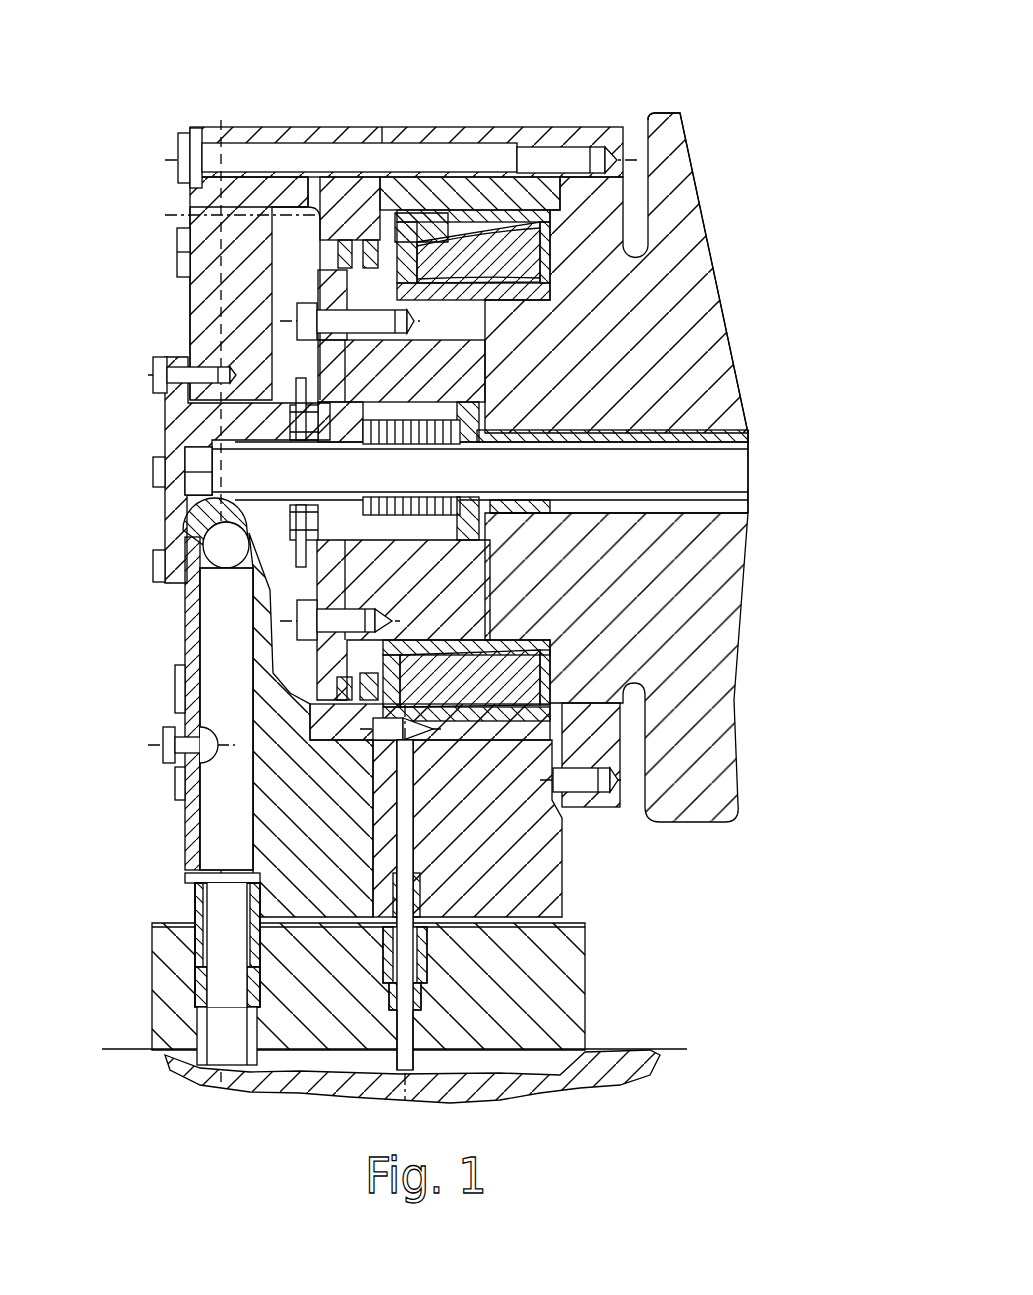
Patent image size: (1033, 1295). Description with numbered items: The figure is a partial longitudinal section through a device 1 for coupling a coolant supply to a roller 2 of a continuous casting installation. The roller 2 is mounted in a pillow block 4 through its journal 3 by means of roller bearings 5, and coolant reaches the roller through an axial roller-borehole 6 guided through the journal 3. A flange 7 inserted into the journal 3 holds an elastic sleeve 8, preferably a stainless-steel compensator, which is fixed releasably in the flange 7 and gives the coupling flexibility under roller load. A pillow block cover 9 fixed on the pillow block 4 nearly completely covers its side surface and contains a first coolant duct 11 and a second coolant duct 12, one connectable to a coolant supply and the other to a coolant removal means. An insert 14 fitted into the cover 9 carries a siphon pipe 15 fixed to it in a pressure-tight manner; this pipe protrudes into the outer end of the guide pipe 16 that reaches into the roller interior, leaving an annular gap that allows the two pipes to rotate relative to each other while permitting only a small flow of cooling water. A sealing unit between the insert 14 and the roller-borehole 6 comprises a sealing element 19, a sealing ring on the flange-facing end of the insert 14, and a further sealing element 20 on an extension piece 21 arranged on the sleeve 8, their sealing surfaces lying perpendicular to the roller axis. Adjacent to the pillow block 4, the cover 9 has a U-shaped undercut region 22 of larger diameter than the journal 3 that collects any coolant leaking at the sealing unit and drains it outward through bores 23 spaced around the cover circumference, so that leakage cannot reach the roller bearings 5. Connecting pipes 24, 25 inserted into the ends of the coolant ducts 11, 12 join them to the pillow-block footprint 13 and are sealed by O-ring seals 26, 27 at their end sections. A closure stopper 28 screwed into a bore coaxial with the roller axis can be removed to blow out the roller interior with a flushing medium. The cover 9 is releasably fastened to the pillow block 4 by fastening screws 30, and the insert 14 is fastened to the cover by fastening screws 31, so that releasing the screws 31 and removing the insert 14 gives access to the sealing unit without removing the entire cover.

The device 1 is at (579, 80).
The roller 2 is at (690, 260).
The journal 3 is at (578, 369).
The pillow block 4 is at (543, 840).
The roller bearings 5 is at (530, 265).
The axial roller-borehole 6 is at (578, 486).
The flange 7 is at (395, 384).
The elastic sleeve 8 is at (470, 404).
The pillow block cover 9 is at (215, 315).
The first coolant duct 11 is at (212, 640).
The second coolant duct 12 is at (226, 719).
The pillow-block footprint 13 is at (590, 930).
The insert 14 is at (183, 420).
The siphon pipe 15 is at (210, 445).
The guide pipe 16 is at (748, 438).
The sealing element 19 is at (300, 405).
The further sealing element 20 is at (300, 545).
The extension piece 21 is at (355, 518).
The undercut region 22 is at (293, 247).
The bores 23 is at (203, 215).
The connecting pipe 24 is at (185, 905).
The connecting pipe 25 is at (227, 945).
The O-ring seal 26 is at (185, 892).
The O-ring seal 27 is at (190, 950).
The closure stopper 28 is at (165, 742).
The fastening screws 30 is at (183, 158).
The fastening screws 31 is at (160, 375).